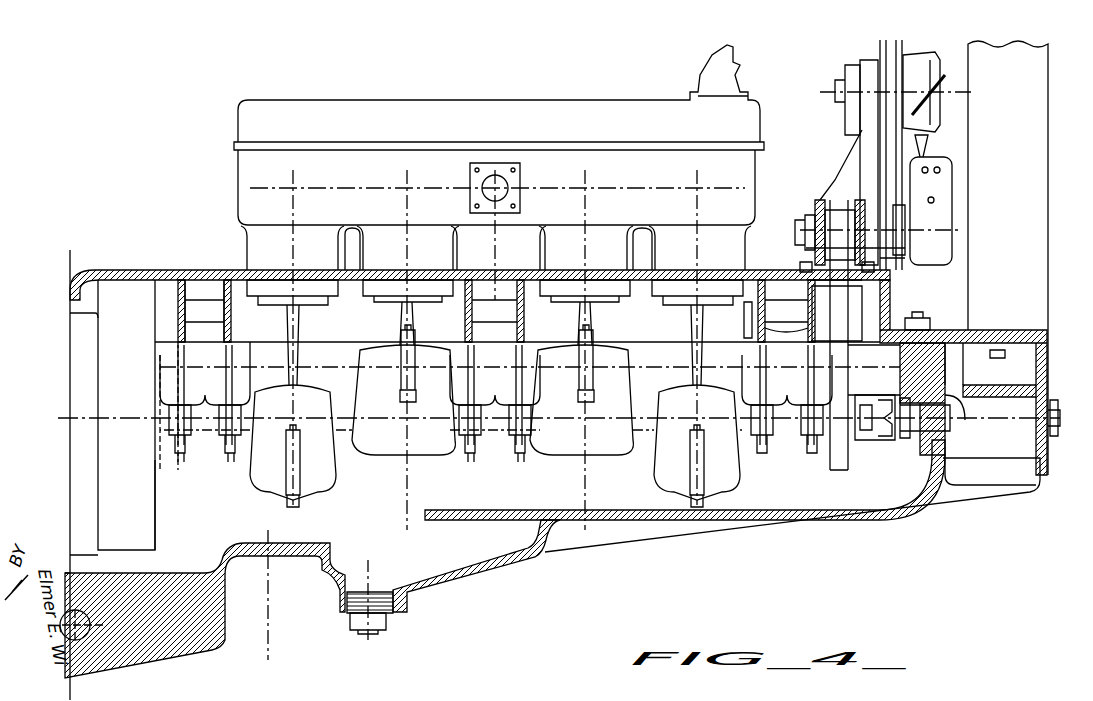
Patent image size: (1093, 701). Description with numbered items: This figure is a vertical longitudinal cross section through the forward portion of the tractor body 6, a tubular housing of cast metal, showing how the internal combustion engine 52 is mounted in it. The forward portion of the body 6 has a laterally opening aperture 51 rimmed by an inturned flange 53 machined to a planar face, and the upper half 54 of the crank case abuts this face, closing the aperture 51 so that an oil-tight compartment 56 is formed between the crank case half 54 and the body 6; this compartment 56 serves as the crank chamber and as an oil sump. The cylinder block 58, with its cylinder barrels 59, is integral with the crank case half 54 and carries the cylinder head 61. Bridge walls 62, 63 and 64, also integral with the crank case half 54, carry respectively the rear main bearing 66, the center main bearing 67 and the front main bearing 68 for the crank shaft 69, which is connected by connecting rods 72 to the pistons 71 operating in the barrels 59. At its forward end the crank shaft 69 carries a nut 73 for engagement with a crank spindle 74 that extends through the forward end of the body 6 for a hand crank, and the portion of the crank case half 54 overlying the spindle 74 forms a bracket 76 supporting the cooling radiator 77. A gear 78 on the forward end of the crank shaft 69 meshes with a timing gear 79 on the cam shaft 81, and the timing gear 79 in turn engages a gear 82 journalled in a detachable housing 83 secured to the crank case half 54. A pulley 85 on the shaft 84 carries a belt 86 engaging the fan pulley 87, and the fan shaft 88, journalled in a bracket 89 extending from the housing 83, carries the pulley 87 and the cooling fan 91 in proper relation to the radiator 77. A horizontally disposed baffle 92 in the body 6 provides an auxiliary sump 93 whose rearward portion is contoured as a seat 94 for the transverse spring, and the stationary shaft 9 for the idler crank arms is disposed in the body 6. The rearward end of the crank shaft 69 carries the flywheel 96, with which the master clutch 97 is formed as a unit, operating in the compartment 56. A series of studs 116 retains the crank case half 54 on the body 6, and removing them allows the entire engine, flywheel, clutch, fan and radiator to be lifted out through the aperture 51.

The body 6 is at (495, 570).
The stationary shaft 9 is at (95, 655).
The laterally opening aperture 51 is at (327, 343).
The internal combustion engine 52 is at (238, 176).
The inturned flange 53 is at (905, 362).
The upper half of the crank case 54 is at (110, 270).
The oil-tight compartment 56 is at (291, 446).
The cylinder block 58 is at (270, 200).
The cylinder barrels 59 is at (247, 248).
The cylinder head 61 is at (537, 108).
The bridge wall 62 is at (204, 311).
The bridge wall 63 is at (494, 311).
The bridge wall 64 is at (786, 311).
The rear main bearing 66 is at (207, 450).
The center main bearing 67 is at (505, 450).
The front main bearing 68 is at (786, 452).
The crank shaft 69 is at (330, 480).
The pistons 71 is at (275, 302).
The connecting rods 72 is at (400, 322).
The nut 73 is at (870, 446).
The crank spindle 74 is at (910, 446).
The bracket 76 is at (976, 348).
The cooling radiator 77 is at (1040, 233).
The gear 78 is at (832, 466).
The timing gear 79 is at (806, 272).
The cam shaft 81 is at (746, 310).
The gear 82 is at (822, 208).
The detachable housing 83 is at (806, 220).
The shaft 84 is at (906, 222).
The pulley 85 is at (906, 245).
The belt 86 is at (870, 152).
The fan pulley 87 is at (880, 47).
The fan shaft 88 is at (942, 97).
The bracket 89 is at (856, 130).
The cooling fan 91 is at (944, 172).
The baffle 92 is at (455, 522).
The auxiliary sump 93 is at (370, 595).
The seat 94 is at (301, 578).
The flywheel 96 is at (100, 383).
The master clutch 97 is at (72, 356).
The studs 116 is at (922, 318).